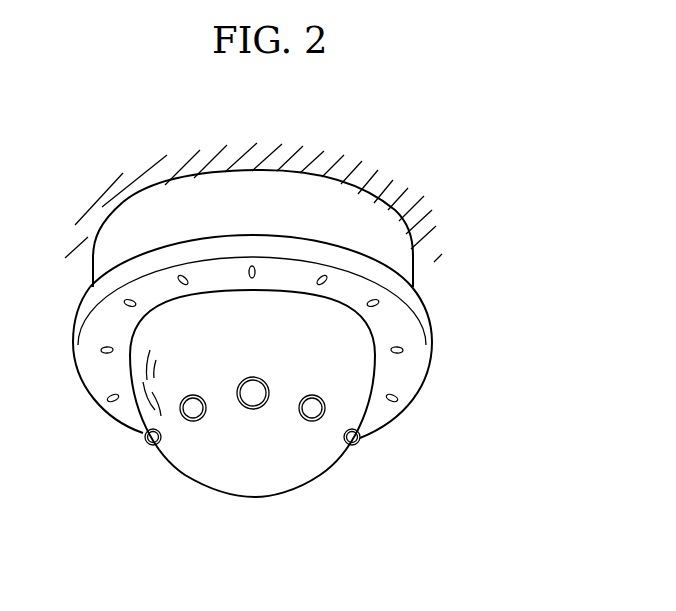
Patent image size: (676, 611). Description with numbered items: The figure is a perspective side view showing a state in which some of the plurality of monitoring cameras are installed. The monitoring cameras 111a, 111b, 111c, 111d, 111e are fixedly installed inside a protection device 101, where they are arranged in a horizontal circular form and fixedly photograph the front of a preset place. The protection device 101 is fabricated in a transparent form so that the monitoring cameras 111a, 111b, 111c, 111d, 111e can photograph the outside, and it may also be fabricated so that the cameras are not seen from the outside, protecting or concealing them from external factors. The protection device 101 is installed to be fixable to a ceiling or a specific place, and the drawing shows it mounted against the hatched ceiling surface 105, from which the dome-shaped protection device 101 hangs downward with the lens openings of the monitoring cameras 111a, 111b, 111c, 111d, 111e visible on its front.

The ceiling 105 is at (401, 200).
The protection device 101 is at (357, 357).
The monitoring camera 111a is at (152, 438).
The monitoring camera 111b is at (193, 410).
The monitoring camera 111c is at (253, 395).
The monitoring camera 111d is at (312, 410).
The monitoring camera 111e is at (353, 440).